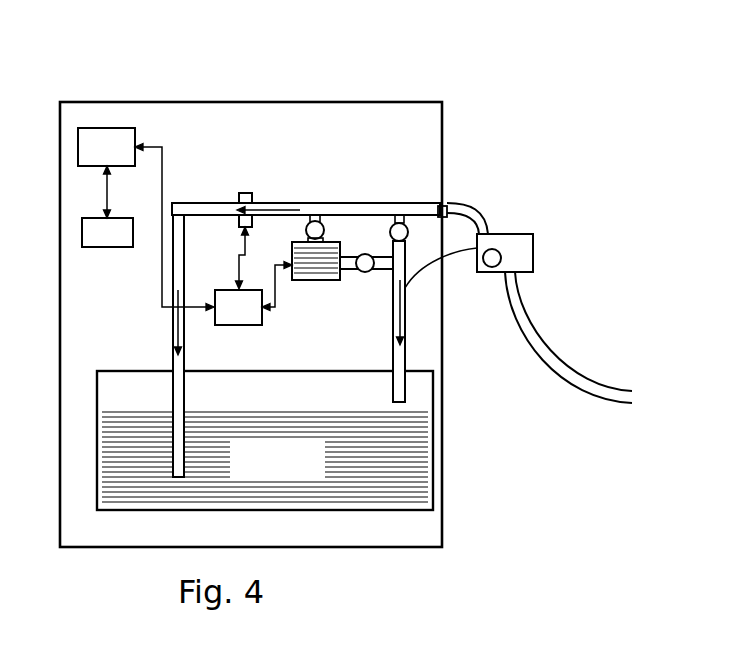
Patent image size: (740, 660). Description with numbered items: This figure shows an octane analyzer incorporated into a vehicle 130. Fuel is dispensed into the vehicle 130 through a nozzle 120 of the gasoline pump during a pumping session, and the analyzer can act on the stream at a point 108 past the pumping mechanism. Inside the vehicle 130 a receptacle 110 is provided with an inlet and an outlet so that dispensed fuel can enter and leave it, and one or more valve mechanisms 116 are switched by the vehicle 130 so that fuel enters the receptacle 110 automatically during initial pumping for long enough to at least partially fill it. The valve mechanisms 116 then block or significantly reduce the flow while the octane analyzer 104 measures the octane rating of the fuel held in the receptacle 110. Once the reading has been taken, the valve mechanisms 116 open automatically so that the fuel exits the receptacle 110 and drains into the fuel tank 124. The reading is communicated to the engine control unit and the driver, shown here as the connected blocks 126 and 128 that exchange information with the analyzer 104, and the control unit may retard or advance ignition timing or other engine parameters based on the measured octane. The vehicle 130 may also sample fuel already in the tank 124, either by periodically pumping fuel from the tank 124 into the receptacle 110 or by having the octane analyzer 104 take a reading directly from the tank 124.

The vehicle 130 is at (248, 102).
The controller 126 is at (106, 147).
The user interface 128 is at (107, 232).
The point past the pumping mechanism 108 is at (244, 193).
The octane analyzer 104 is at (236, 326).
The receptacle 110 is at (313, 281).
The valve mechanisms 116 is at (361, 255).
The nozzle 120 is at (467, 203).
The fuel tank 124 is at (265, 440).